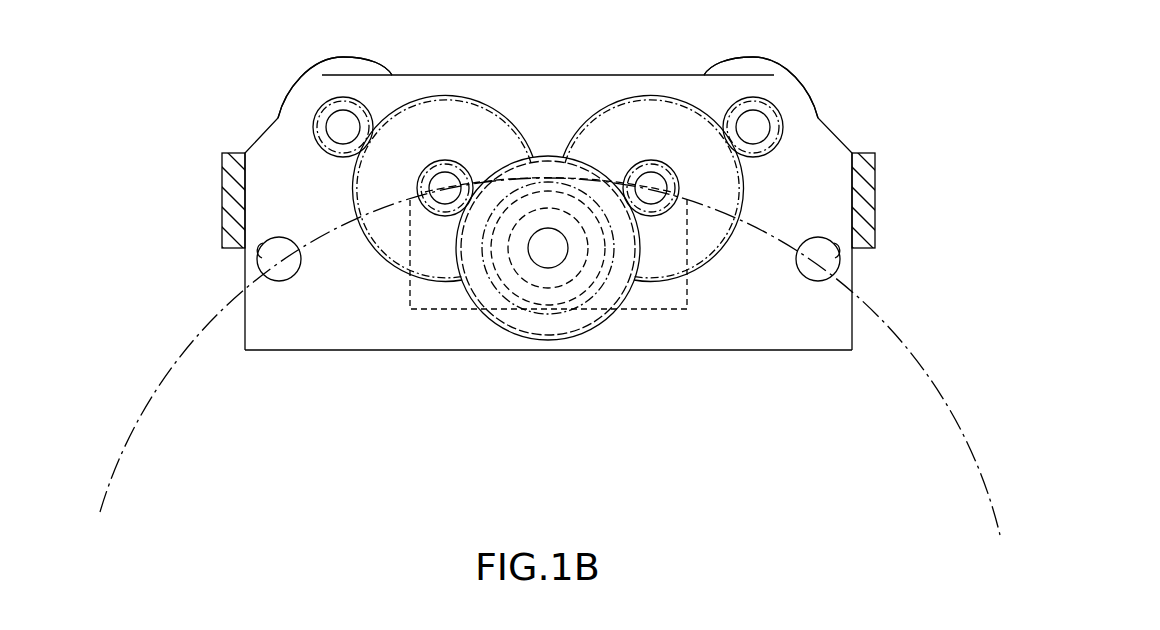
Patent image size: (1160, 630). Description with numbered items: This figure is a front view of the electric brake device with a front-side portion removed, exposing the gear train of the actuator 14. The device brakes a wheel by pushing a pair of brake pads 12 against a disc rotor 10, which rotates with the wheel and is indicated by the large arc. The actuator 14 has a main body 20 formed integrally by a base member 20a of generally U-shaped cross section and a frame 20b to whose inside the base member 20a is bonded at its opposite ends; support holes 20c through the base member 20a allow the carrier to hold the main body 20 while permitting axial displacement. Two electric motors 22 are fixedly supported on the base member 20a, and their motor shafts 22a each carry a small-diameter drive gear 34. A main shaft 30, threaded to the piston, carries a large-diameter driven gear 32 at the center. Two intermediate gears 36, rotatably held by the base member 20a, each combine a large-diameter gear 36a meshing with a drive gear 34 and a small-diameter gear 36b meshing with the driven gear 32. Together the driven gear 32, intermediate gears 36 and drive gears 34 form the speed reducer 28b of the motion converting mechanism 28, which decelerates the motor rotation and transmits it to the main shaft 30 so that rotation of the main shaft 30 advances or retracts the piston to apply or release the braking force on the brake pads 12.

The disc rotor 10 is at (917, 365).
The brake pad 12 is at (690, 300).
The actuator 14 is at (291, 396).
The main body 20 is at (850, 363).
The base member 20a is at (807, 337).
The frame 20b is at (868, 162).
The support hole 20c is at (260, 263).
The electric motor 22 is at (292, 84).
The motor shaft 22a is at (338, 118).
The motion converting mechanism 28 is at (454, 330).
The speed reducer 28b is at (427, 288).
The main shaft 30 is at (553, 253).
The driven gear 32 is at (545, 326).
The drive gear 34 is at (362, 110).
The intermediate gear 36 is at (366, 263).
The large-diameter gear 36a is at (350, 191).
The small-diameter gear 36b is at (428, 213).